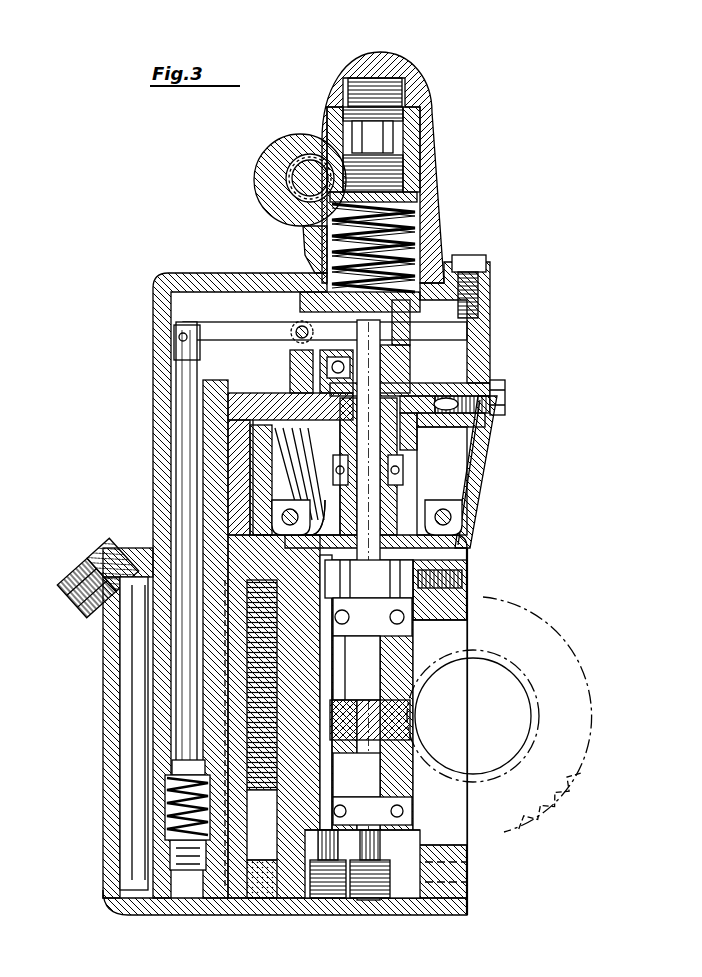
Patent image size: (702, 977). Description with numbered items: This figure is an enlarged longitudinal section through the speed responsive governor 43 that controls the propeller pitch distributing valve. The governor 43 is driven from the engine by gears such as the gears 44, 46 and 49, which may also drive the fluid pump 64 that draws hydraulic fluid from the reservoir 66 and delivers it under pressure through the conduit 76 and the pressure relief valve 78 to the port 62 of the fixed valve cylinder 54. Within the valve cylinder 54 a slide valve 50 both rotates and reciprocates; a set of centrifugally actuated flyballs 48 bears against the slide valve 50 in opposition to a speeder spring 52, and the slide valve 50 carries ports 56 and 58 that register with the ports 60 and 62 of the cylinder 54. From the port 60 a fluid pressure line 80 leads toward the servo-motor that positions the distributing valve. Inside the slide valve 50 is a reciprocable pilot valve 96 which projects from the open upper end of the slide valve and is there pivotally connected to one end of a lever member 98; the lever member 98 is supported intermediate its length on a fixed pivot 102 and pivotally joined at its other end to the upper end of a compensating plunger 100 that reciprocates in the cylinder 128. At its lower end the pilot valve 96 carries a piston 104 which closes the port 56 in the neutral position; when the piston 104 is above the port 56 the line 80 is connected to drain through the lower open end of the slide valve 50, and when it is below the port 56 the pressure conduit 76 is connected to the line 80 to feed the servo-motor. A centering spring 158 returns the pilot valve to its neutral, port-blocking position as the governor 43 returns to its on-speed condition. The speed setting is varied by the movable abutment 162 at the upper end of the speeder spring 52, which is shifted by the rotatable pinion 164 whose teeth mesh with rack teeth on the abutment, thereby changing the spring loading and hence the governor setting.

The speed responsive governor 43 is at (490, 330).
The gear 44 is at (401, 670).
The gear 46 is at (535, 678).
The flyballs 48 is at (453, 459).
The gear 49 is at (528, 606).
The slide valve 50 is at (465, 540).
The speeder spring 52 is at (412, 242).
The valve cylinder 54 is at (430, 392).
The port 56 is at (366, 474).
The port 58 is at (372, 445).
The port 60 is at (460, 473).
The port 62 is at (322, 402).
The fluid pump 64 is at (380, 878).
The reservoir 66 is at (130, 748).
The conduit 76 is at (250, 400).
The pressure relief valve 78 is at (238, 884).
The fluid pressure line 80 is at (447, 410).
The pilot valve 96 is at (327, 440).
The lever member 98 is at (235, 332).
The compensating plunger 100 is at (180, 487).
The fixed pivot 102 is at (298, 332).
The piston 104 is at (340, 481).
The cylinder 128 is at (177, 517).
The centering spring 158 is at (160, 813).
The movable abutment 162 is at (433, 142).
The pinion 164 is at (287, 167).